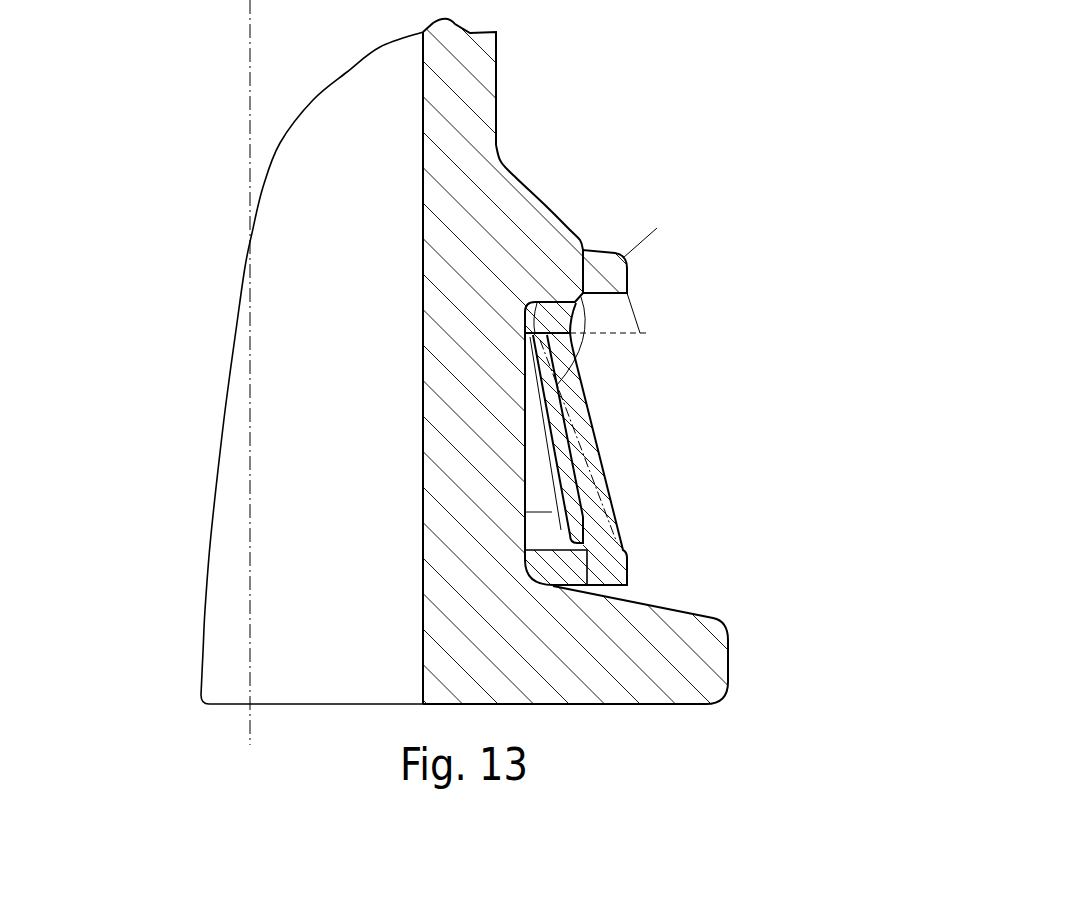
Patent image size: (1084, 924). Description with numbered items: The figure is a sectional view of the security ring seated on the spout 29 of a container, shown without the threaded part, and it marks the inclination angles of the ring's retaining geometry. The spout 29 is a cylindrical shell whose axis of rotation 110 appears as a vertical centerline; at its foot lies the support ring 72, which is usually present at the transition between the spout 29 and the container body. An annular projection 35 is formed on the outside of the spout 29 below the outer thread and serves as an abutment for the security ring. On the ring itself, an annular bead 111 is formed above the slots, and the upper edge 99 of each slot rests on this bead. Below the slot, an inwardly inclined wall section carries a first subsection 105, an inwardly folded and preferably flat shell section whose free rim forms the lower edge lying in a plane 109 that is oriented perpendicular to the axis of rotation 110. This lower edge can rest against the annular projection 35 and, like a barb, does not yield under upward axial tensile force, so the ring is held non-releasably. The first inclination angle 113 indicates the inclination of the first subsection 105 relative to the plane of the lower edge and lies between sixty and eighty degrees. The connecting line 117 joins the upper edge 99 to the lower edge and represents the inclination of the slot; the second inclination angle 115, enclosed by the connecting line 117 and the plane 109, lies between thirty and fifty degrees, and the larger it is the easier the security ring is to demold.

The support ring 72 is at (712, 637).
The spout 29 is at (360, 92).
The axis of rotation 110 is at (256, 17).
The annular projection 35 is at (513, 205).
The annular bead 111 is at (587, 250).
The connecting line 117 is at (637, 247).
The upper edge 99 is at (527, 305).
The first subsection 105 is at (603, 493).
The first inclination angle 113 is at (562, 355).
The second inclination angle 115 is at (627, 310).
The plane 109 is at (640, 335).